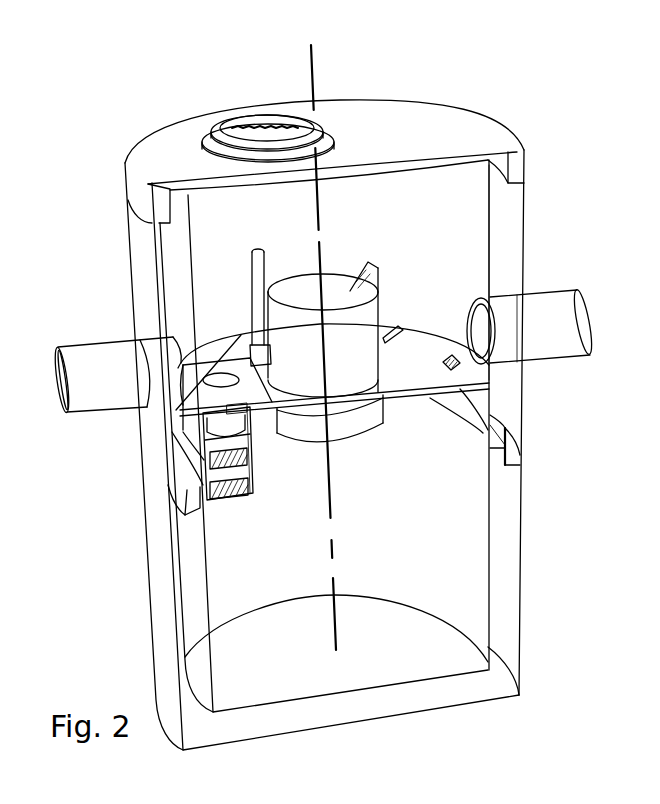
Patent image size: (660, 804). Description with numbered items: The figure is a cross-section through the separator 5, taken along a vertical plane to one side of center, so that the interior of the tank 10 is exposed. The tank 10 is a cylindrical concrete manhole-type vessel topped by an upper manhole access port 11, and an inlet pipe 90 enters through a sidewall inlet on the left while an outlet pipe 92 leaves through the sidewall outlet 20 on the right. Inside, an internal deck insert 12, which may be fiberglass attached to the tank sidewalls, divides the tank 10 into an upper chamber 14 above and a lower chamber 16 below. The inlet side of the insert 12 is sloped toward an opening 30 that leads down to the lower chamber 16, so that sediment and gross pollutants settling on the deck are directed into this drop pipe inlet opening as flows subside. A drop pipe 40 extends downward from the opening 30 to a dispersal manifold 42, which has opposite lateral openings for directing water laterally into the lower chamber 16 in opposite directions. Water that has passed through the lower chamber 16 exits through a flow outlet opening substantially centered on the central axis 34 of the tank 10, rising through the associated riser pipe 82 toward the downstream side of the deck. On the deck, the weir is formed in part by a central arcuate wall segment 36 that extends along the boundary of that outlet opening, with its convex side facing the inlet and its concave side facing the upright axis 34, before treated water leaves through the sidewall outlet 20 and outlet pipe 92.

The separator 5 is at (527, 85).
The tank 10 is at (524, 183).
The upper manhole access port 11 is at (213, 124).
The internal deck insert 12 is at (422, 330).
The upper chamber 14 is at (440, 235).
The lower chamber 16 is at (425, 554).
The sidewall outlet 20 is at (482, 343).
The opening 30 is at (220, 377).
The central axis 34 is at (313, 72).
The central arcuate wall segment 36 is at (302, 272).
The drop pipe 40 is at (240, 417).
The dispersal manifold 42 is at (235, 505).
The riser pipe 82 is at (360, 427).
The inlet pipe 90 is at (93, 400).
The outlet pipe 92 is at (556, 352).